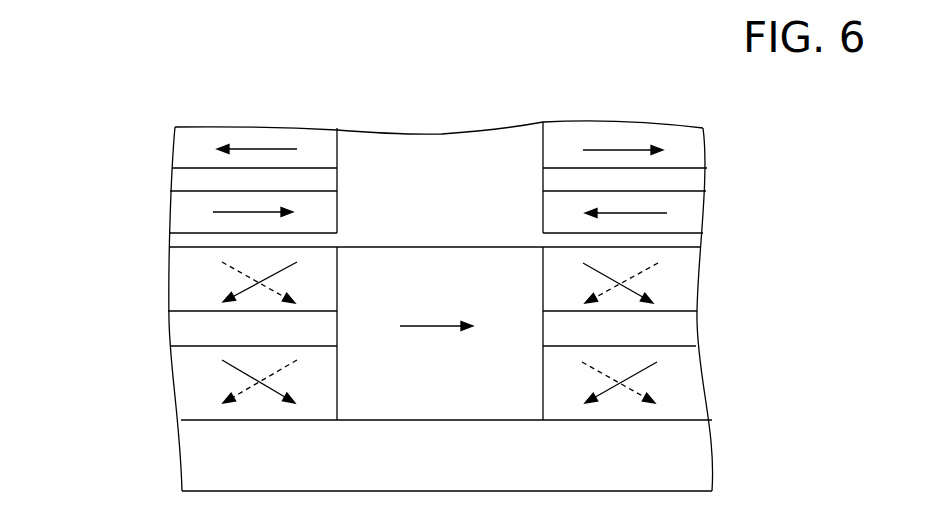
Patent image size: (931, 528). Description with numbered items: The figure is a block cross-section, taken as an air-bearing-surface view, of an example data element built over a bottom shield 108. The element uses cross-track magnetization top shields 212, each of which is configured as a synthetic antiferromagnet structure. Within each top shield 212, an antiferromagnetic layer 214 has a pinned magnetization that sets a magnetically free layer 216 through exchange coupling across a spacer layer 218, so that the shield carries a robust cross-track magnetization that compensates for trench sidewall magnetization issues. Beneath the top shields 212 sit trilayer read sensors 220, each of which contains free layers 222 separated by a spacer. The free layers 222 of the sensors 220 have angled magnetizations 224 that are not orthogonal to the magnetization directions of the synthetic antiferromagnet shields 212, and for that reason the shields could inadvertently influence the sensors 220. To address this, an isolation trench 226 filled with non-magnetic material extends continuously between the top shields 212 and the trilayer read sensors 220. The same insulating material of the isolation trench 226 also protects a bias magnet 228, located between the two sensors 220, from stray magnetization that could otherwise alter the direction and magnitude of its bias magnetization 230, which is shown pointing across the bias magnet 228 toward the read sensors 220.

The bottom shield 108 is at (362, 454).
The cross-track magnetization top shield 212 is at (248, 120).
The antiferromagnetic layer 214 is at (175, 150).
The magnetically free layer 216 is at (174, 212).
The spacer layer 218 is at (175, 178).
The trilayer read sensor 220 is at (89, 319).
The free layer 222 is at (168, 281).
The angled magnetization 224 is at (310, 375).
The isolation trench 226 is at (442, 125).
The bias magnet 228 is at (442, 265).
The bias magnetization 230 is at (436, 338).